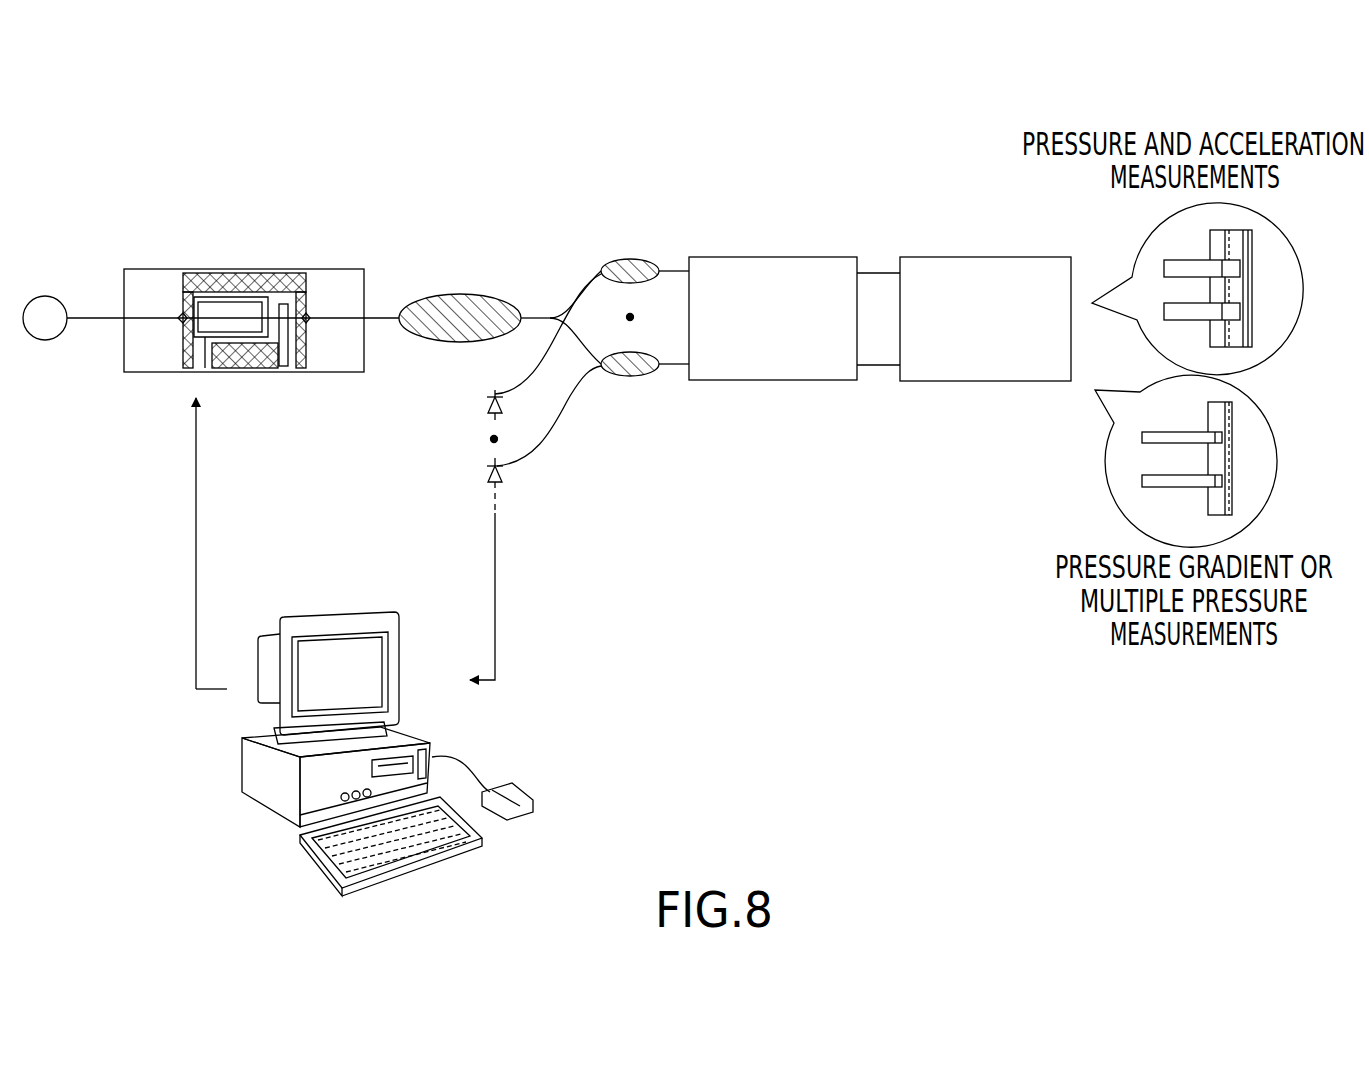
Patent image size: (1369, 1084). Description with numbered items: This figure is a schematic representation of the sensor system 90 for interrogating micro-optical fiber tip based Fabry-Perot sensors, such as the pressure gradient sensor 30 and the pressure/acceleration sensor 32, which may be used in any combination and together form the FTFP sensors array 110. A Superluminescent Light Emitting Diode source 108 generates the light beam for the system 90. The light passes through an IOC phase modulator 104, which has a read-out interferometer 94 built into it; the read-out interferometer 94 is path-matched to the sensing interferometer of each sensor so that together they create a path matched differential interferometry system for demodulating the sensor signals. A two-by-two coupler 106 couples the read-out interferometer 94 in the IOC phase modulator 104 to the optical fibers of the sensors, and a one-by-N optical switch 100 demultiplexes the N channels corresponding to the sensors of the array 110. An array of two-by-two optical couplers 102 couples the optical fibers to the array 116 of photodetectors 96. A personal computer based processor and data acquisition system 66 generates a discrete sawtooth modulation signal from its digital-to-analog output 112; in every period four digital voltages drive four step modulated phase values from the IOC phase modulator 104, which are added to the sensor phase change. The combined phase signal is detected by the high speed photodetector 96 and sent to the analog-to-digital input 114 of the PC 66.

The pressure gradient sensor 30 is at (1106, 480).
The pressure/acceleration sensor 32 is at (1275, 358).
The personal computer based processor and data acquisition system 66 is at (242, 764).
The system 90 is at (710, 193).
The read-out interferometer 94 is at (203, 368).
The photodetectors 96 is at (488, 400).
The optical switch 100 is at (774, 257).
The optical couplers 102 is at (633, 259).
The IOC phase modulator 104 is at (244, 325).
The coupler 106 is at (458, 294).
The SLD source 108 is at (45, 296).
The FTFP sensors array 110 is at (987, 257).
The digital-to-analog output 112 is at (237, 694).
The analog-to-digital input 114 is at (434, 682).
The array of photodetectors 116 is at (468, 438).